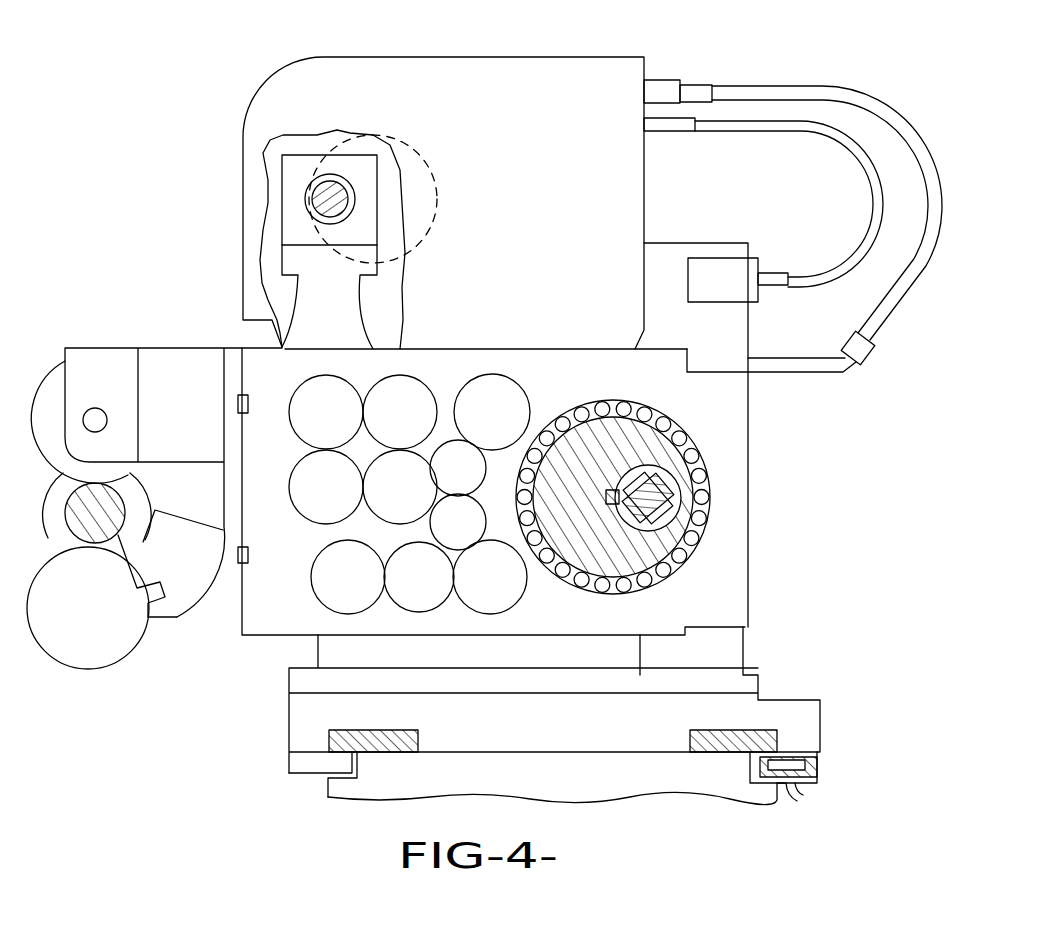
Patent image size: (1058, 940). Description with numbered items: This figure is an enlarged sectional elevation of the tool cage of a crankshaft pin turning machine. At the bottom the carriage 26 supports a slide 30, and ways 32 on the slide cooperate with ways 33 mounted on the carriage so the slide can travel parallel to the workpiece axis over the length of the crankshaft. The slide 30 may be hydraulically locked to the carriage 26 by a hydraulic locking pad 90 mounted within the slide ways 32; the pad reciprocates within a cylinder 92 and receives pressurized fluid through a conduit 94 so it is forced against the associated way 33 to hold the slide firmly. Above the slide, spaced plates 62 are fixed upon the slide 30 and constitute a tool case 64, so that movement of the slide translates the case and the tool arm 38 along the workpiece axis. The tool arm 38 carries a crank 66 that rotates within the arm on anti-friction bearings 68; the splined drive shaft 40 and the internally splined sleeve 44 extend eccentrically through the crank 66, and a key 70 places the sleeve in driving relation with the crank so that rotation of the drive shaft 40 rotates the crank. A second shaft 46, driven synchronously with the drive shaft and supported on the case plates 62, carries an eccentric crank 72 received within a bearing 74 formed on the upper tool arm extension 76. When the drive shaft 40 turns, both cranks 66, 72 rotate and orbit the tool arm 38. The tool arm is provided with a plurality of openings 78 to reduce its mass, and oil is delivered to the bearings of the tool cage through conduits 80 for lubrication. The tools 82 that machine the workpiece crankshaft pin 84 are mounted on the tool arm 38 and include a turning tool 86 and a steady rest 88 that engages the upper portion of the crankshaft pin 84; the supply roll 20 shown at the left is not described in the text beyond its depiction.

The supply roll of web material 20 is at (103, 636).
The carriage 26 is at (549, 790).
The slide 30 is at (783, 704).
The ways 32 is at (310, 770).
The ways 33 is at (372, 742).
The tool arm 38 is at (268, 612).
The splined drive shaft 40 is at (662, 490).
The internally splined sleeve 44 is at (672, 520).
The shaft 46 is at (428, 151).
The plates 62 is at (415, 72).
The tool case 64 is at (596, 55).
The crank 66 is at (600, 560).
The anti-friction bearings 68 is at (676, 434).
The key 70 is at (606, 495).
The eccentric crank 72 is at (340, 176).
The bearing 74 is at (307, 198).
The upper tool arm extension 76 is at (363, 258).
The openings 78 is at (470, 378).
The conduits 80 is at (930, 234).
The tools 82 is at (155, 345).
The crankshaft pin 84 is at (127, 500).
The turning tool 86 is at (179, 571).
The steady rest 88 is at (187, 425).
The hydraulic locking pad 90 is at (803, 778).
The cylinder 92 is at (822, 760).
The conduit 94 is at (790, 803).